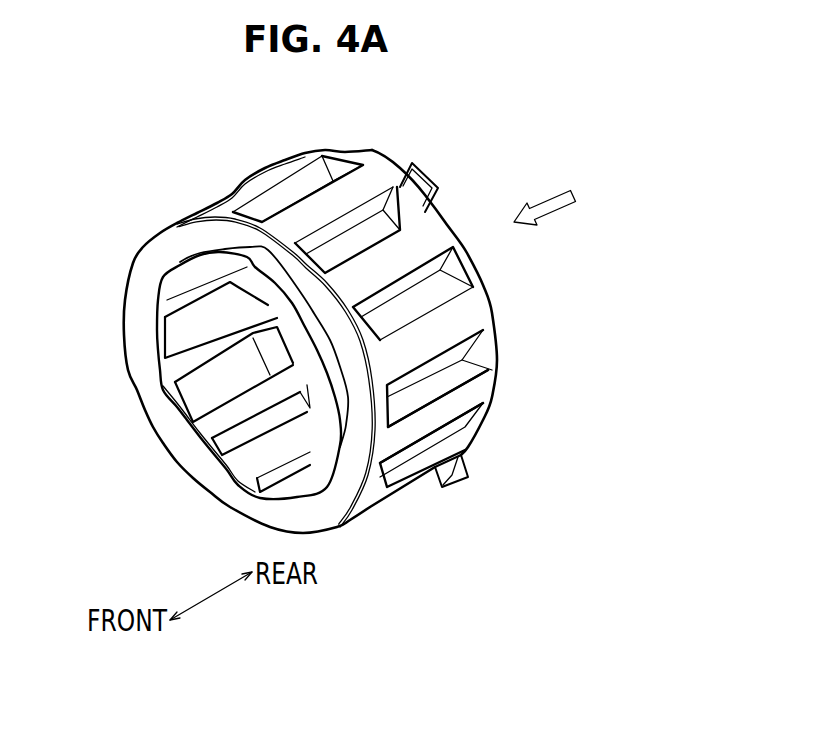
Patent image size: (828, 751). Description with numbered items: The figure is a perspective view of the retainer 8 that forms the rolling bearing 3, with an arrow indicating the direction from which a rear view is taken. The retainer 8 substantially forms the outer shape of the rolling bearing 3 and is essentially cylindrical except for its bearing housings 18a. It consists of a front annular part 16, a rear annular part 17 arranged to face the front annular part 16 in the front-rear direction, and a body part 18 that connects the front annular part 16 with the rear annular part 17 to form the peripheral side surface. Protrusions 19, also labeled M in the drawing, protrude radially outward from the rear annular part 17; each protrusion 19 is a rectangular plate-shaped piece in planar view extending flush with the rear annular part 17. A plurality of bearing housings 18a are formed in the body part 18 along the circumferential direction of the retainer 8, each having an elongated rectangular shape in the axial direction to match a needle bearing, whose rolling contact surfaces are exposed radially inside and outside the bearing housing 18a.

The rolling bearing 3 is at (397, 307).
The retainer 8 is at (397, 307).
The front annular part 16 is at (328, 502).
The rear annular part 17 is at (483, 352).
The body part 18 is at (465, 400).
The bearing housing 18a is at (314, 182).
The protrusion 19 is at (430, 162).
The mark (projection) M is at (510, 296).